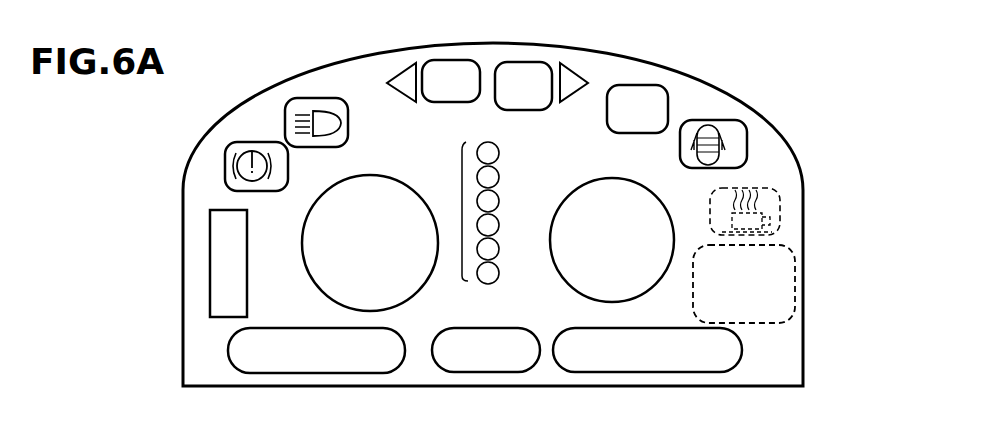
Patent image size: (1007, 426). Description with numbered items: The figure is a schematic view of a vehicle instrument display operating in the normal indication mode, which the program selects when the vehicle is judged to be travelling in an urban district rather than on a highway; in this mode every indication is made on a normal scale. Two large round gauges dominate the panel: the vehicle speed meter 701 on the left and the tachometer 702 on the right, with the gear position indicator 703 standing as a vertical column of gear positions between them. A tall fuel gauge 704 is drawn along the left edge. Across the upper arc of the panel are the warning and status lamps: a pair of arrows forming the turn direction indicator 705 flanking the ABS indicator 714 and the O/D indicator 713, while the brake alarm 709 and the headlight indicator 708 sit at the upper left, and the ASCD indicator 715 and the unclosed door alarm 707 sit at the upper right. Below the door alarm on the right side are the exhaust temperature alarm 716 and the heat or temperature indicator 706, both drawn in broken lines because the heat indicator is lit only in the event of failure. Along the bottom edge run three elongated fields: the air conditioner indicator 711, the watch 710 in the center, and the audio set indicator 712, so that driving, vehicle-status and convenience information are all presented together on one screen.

The vehicle speed meter 701 is at (326, 293).
The tachometer 702 is at (585, 184).
The gear position indicator 703 is at (461, 208).
The fuel gauge 704 is at (208, 235).
The turn direction indicator 705 is at (412, 72).
The heat or temperature indicator 706 is at (797, 275).
The unclosed door alarm 707 is at (743, 130).
The headlight indicator 708 is at (315, 98).
The brake alarm 709 is at (247, 141).
The watch 710 is at (468, 373).
The air conditioner indicator 711 is at (307, 375).
The audio set indicator 712 is at (728, 375).
The O/D indicator 713 is at (530, 61).
The ABS indicator 714 is at (458, 59).
The ASCD indicator 715 is at (661, 85).
The exhaust temperature alarm 716 is at (783, 200).